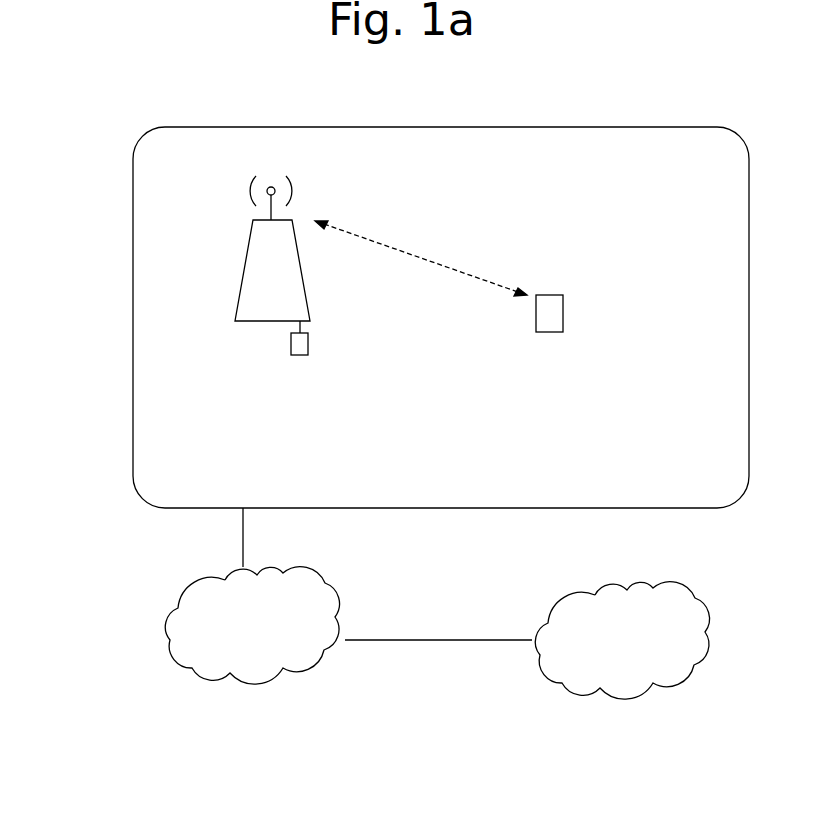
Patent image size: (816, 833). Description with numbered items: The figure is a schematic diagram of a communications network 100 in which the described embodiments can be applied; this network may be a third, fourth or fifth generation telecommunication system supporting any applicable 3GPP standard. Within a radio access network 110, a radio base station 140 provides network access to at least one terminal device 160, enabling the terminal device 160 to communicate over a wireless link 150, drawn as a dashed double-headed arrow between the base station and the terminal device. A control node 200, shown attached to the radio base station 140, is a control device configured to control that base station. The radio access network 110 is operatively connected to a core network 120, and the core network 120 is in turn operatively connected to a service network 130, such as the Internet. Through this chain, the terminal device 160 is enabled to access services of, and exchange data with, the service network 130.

The communications network 100 is at (106, 117).
The radio access network 110 is at (133, 437).
The core network 120 is at (273, 635).
The service network 130 is at (643, 650).
The radio base station 140 is at (245, 267).
The wireless link 150 is at (433, 263).
The terminal device 160 is at (549, 332).
The control node 200 is at (298, 355).